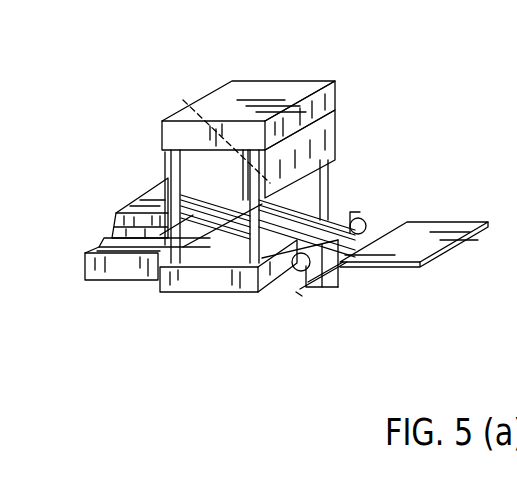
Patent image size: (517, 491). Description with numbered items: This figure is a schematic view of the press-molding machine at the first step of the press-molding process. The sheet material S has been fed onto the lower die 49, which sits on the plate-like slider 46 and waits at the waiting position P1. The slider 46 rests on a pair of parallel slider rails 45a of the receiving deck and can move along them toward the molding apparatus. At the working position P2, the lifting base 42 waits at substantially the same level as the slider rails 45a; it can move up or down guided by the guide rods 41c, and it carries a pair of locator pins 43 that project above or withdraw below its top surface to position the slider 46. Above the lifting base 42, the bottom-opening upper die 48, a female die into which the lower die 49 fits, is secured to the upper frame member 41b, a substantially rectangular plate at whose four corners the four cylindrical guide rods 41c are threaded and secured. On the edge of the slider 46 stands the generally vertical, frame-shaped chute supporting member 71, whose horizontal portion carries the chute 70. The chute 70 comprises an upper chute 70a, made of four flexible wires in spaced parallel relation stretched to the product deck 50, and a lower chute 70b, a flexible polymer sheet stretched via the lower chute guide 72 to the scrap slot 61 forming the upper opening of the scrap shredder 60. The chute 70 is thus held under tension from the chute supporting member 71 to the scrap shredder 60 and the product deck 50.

The upper frame member 41b is at (333, 92).
The guide rods 41c is at (326, 195).
The lifting base 42 is at (163, 292).
The locator pins 43 is at (216, 199).
The slider rails 45a is at (85, 268).
The slider 46 is at (102, 243).
The upper die 48 is at (320, 137).
The lower die 49 is at (115, 220).
The product deck 50 is at (413, 227).
The scrap shredder 60 is at (330, 293).
The scrap slot 61 is at (337, 270).
The chute 70 is at (300, 330).
The upper chute 70a is at (294, 283).
The lower chute 70b is at (327, 268).
The chute supporting member 71 is at (165, 190).
The lower chute guide 72 is at (289, 268).
The sheet material S is at (147, 198).
The waiting position P1 is at (158, 285).
The working position P2 is at (258, 297).